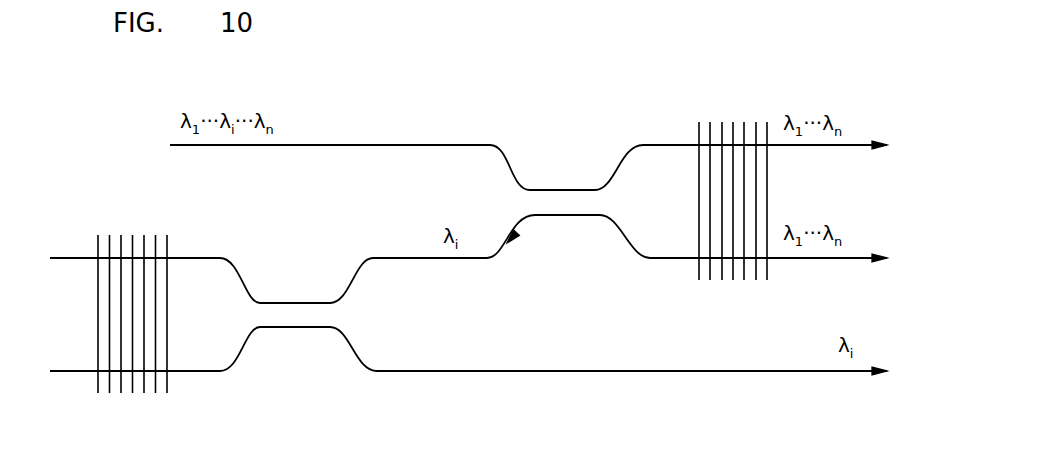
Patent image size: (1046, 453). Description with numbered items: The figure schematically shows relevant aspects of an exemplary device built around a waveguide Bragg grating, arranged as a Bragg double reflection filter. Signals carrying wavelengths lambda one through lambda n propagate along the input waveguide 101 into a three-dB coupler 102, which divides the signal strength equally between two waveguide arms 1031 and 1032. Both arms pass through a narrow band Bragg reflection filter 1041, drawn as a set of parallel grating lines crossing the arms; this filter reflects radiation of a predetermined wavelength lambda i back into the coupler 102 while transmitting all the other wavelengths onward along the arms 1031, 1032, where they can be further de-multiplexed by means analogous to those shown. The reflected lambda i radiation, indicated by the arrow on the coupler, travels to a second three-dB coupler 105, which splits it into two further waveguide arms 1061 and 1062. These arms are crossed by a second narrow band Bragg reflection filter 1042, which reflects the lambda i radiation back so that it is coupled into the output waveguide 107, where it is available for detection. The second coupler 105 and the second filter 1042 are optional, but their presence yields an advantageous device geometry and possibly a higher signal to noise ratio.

The waveguide 101 is at (350, 145).
The 3-db coupler 102 is at (561, 188).
The waveguide arm 1031 is at (664, 145).
The waveguide arm 1032 is at (660, 258).
The narrow band Bragg reflection filter 1041 is at (758, 105).
The narrow band Bragg reflection filter 1042 is at (164, 220).
The second 3-db coupler 105 is at (298, 328).
The waveguide arm 1061 is at (195, 258).
The waveguide arm 1062 is at (192, 371).
The waveguide 107 is at (660, 371).